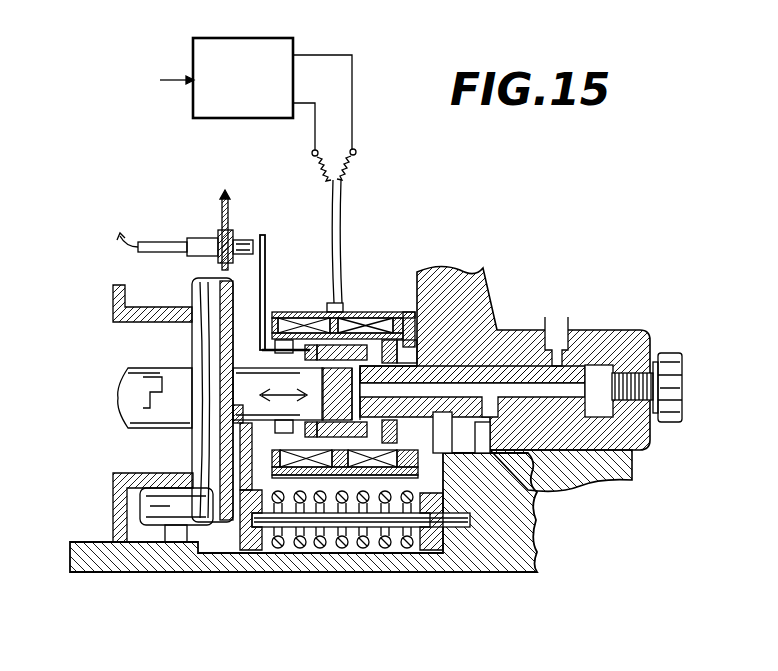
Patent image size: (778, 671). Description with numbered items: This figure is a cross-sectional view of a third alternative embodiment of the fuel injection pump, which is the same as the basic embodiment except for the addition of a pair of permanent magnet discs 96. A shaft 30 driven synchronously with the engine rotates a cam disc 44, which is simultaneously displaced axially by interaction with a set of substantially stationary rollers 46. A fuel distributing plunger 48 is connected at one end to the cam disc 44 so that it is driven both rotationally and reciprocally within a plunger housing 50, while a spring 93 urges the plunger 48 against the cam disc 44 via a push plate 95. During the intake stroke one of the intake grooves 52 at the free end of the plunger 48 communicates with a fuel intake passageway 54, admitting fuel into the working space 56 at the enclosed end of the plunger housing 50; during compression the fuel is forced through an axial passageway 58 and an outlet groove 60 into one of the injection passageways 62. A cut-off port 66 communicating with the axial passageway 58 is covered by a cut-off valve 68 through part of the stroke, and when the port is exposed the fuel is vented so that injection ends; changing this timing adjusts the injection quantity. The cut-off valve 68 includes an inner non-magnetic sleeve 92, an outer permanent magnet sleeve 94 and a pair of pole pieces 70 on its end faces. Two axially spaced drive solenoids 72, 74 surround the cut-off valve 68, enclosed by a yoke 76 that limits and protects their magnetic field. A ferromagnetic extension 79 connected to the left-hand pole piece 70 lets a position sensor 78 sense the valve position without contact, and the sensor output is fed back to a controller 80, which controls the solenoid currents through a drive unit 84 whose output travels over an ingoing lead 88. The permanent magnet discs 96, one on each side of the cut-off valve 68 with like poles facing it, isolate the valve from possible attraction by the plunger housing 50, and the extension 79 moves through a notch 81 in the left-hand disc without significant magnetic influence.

The shaft 30 is at (132, 385).
The cam disc 44 is at (203, 443).
The rollers 46 is at (160, 517).
The fuel distributing plunger 48 is at (495, 377).
The plunger housing 50 is at (528, 338).
The intake grooves 52 is at (608, 488).
The fuel intake passageway 54 is at (557, 328).
The working space 56 is at (597, 377).
The axial passageway 58 is at (458, 390).
The outlet groove 60 is at (523, 490).
The injection passageways 62 is at (540, 530).
The cut-off port 66 is at (410, 520).
The cut-off valve 68 is at (285, 478).
The pole pieces 70 is at (392, 470).
The drive solenoid 72 is at (307, 325).
The drive solenoid 74 is at (360, 315).
The yoke 76 is at (396, 318).
The position sensor 78 is at (243, 245).
The ferromagnetic extension 79 is at (263, 235).
The controller 80 is at (118, 81).
The notch 81 is at (285, 346).
The drive unit 84 is at (213, 38).
The ingoing lead 88 is at (353, 107).
The non-magnetic sleeve 92 is at (350, 458).
The spring 93 is at (432, 545).
The permanent magnet sleeve 94 is at (326, 527).
The push plate 95 is at (240, 497).
The permanent magnet discs 96 is at (493, 560).